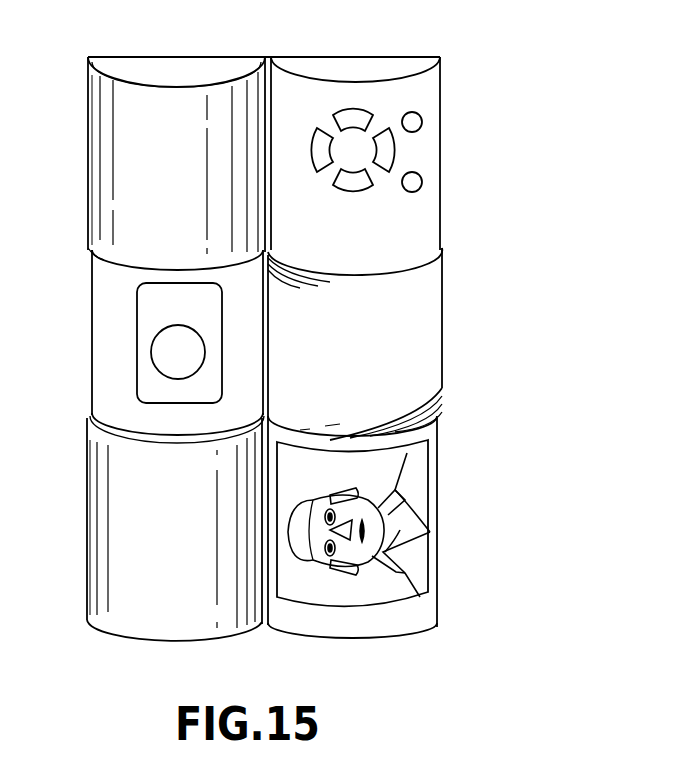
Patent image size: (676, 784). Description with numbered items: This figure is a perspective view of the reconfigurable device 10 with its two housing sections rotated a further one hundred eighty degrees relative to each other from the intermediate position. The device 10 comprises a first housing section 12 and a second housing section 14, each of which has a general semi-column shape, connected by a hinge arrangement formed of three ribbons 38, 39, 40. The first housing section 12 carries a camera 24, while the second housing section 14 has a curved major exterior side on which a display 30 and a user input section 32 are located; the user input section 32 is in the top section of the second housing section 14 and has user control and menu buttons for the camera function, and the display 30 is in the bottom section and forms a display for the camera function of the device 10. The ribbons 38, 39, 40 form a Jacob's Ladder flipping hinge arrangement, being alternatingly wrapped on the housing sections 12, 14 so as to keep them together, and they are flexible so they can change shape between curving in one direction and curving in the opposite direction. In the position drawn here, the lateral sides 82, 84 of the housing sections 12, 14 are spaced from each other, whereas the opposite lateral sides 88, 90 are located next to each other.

The device 10 is at (468, 84).
The first housing section 12 is at (102, 363).
The second housing section 14 is at (438, 215).
The camera 24 is at (170, 347).
The display 30 is at (413, 503).
The user input section 32 is at (422, 144).
The ribbon 38 is at (418, 334).
The ribbon 39 is at (123, 158).
The ribbon 40 is at (110, 513).
The lateral side 82 is at (102, 273).
The lateral side 84 is at (438, 162).
The opposite lateral side 88 is at (263, 58).
The opposite lateral side 90 is at (277, 60).